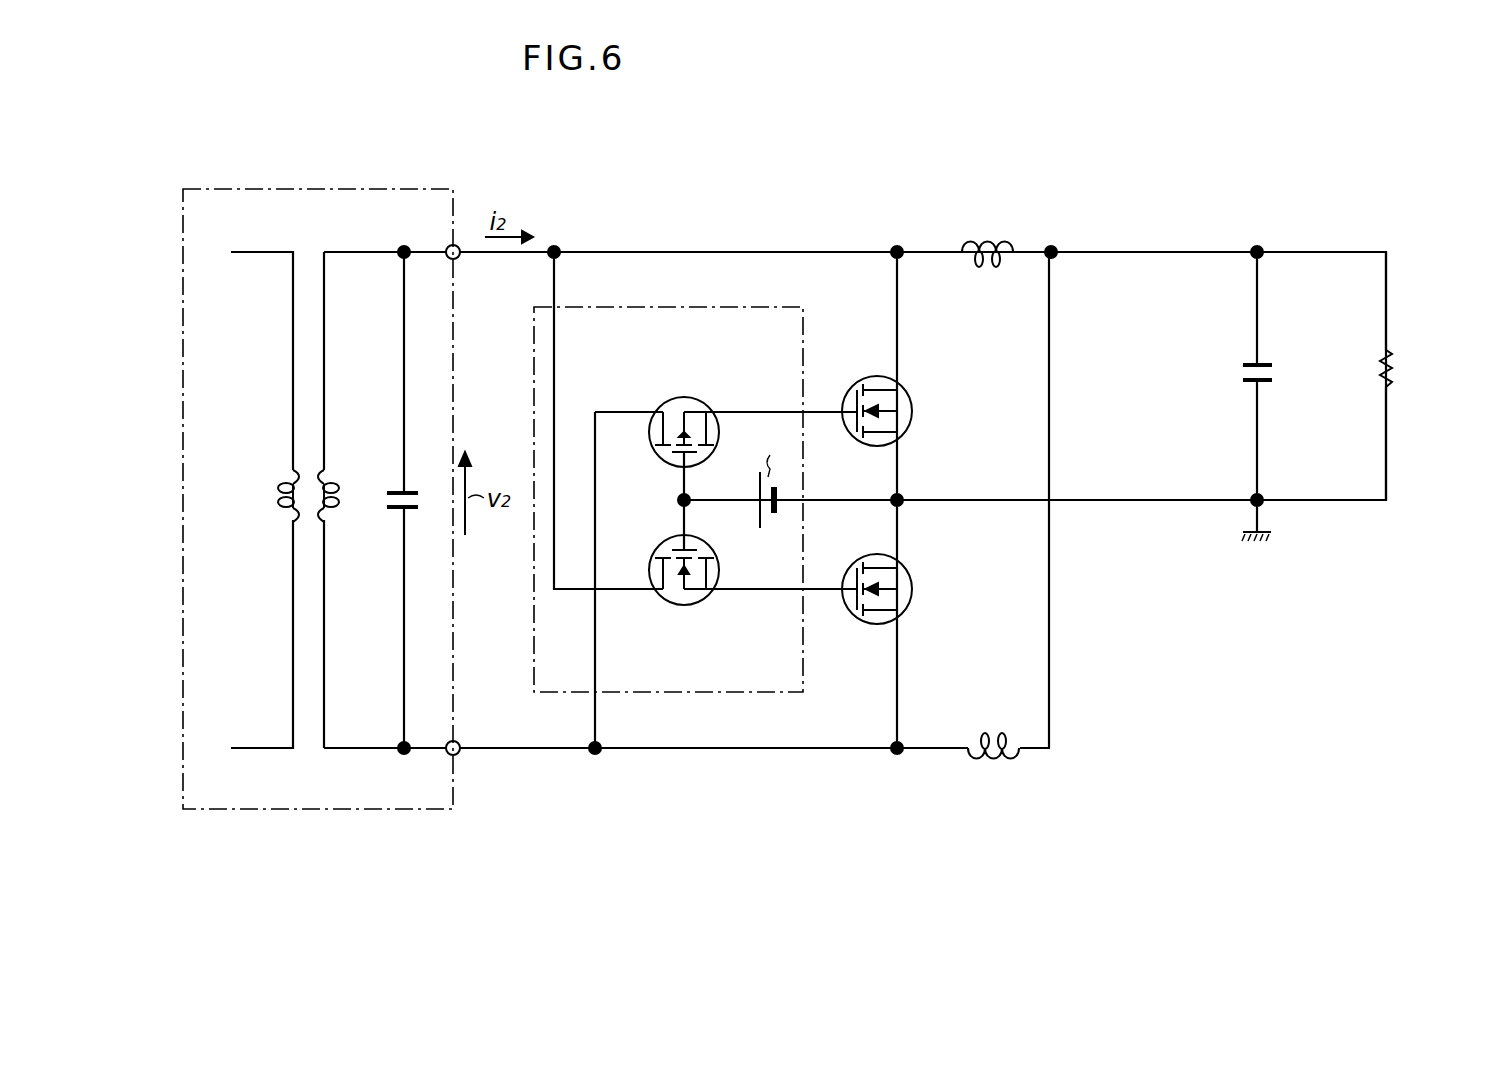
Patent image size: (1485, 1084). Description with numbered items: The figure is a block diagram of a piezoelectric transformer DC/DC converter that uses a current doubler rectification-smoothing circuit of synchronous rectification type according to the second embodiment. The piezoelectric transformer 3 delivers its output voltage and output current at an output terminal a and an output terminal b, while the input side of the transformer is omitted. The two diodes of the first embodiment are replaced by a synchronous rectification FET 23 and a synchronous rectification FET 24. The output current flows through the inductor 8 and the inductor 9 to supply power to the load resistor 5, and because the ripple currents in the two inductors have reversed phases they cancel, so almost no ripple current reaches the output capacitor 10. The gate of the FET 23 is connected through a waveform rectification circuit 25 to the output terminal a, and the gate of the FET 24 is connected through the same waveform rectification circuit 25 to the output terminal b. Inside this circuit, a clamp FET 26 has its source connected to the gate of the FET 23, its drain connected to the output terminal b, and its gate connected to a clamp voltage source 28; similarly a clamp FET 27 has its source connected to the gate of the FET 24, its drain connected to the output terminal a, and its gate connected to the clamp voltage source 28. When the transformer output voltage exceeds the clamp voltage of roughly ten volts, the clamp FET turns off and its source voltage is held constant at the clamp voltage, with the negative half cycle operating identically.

The piezoelectric transformer 3 is at (341, 184).
The load resistor 5 is at (1393, 372).
The inductor 8 is at (991, 243).
The inductor 9 is at (993, 757).
The output capacitor 10 is at (1272, 372).
The synchronous rectification FET 23 is at (912, 411).
The synchronous rectification FET 24 is at (912, 589).
The waveform rectification circuit 25 is at (710, 307).
The clamp FET 26 is at (684, 397).
The clamp FET 27 is at (684, 606).
The clamp voltage source 28 is at (753, 507).
The output terminal a is at (458, 246).
The output terminal b is at (458, 754).